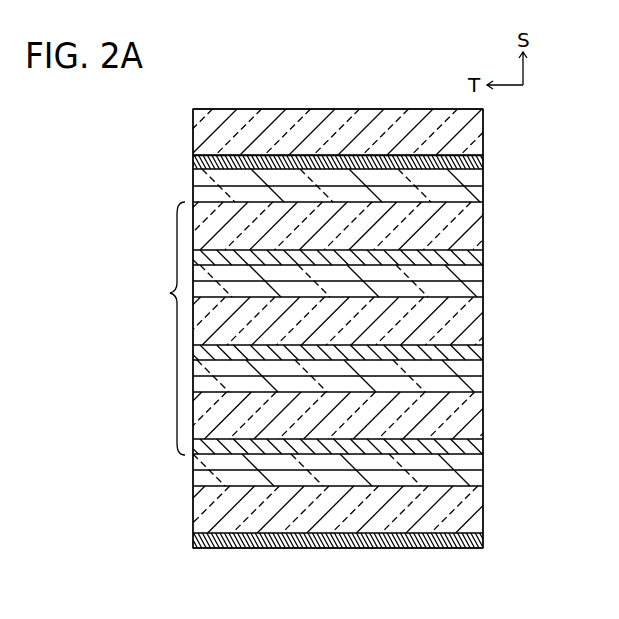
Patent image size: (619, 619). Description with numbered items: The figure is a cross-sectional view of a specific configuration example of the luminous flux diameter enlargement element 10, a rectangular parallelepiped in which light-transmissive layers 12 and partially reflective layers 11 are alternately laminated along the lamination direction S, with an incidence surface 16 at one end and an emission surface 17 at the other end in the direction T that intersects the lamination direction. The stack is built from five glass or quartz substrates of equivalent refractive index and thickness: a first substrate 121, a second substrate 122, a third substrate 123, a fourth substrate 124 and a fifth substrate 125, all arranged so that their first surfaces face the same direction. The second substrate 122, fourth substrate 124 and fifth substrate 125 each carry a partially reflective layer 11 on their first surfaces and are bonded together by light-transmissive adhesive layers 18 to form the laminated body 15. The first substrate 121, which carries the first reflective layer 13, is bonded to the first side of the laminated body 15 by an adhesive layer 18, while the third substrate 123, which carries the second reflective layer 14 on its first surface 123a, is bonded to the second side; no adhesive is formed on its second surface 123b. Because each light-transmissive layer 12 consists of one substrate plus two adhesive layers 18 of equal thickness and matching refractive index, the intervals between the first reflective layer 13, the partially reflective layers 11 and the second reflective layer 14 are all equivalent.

The luminous flux diameter enlargement element 10 is at (407, 90).
The partially reflective layer 11 is at (484, 258).
The light-transmissive layer 12 is at (484, 178).
The first reflective layer 13 is at (484, 542).
The second reflective layer 14 is at (484, 162).
The laminated body 15 is at (164, 328).
The incidence surface 16 is at (483, 403).
The emission surface 17 is at (192, 418).
The light-transmissive adhesive layer 18 is at (484, 193).
The first substrate 121 is at (356, 533).
The second substrate 122 is at (355, 438).
The third substrate 123 is at (484, 133).
The first surface of third substrate 123a is at (250, 156).
The second surface of third substrate 123b is at (252, 108).
The fourth substrate 124 is at (354, 335).
The fifth substrate 125 is at (353, 230).